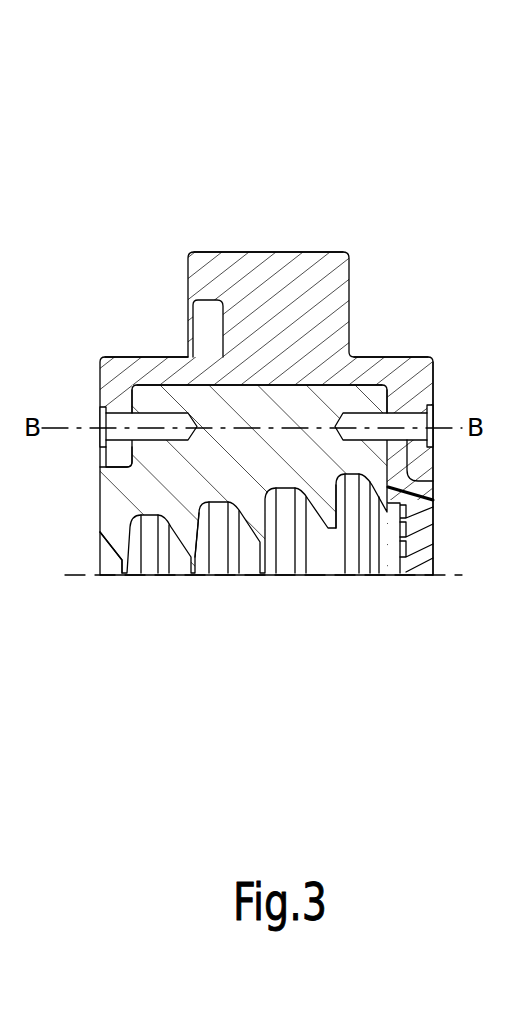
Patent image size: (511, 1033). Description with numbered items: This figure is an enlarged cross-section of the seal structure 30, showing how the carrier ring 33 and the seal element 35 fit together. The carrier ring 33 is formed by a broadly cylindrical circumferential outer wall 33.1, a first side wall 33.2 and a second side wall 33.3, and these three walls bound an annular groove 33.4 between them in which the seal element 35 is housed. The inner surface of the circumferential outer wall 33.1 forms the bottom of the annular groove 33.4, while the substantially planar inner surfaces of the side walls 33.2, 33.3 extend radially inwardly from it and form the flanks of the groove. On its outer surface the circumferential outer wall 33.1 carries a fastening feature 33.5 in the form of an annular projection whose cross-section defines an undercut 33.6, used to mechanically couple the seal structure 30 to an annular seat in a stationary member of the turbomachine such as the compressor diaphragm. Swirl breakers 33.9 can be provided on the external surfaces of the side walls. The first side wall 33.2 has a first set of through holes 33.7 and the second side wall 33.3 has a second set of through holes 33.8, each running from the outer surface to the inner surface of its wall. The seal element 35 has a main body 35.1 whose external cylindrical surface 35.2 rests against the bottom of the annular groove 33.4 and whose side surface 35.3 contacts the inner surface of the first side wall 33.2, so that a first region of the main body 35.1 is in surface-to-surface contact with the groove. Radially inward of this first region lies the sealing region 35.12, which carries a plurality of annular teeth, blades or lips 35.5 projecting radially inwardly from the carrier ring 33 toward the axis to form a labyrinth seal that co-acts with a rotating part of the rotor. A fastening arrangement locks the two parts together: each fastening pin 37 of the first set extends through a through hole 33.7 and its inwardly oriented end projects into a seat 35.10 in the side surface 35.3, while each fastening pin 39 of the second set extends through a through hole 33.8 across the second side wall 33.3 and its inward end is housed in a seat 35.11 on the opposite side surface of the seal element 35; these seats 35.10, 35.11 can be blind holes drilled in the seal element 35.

The seal structure 30 is at (432, 142).
The carrier ring 33 is at (311, 270).
The circumferential outer wall 33.1 is at (381, 371).
The first side wall 33.2 is at (419, 381).
The second side wall 33.3 is at (120, 393).
The annular groove 33.4 is at (212, 398).
The fastening feature 33.5 is at (258, 272).
The undercut 33.6 is at (208, 312).
The first set of through holes 33.7 is at (402, 486).
The second set of through holes 33.8 is at (98, 467).
The swirl breakers 33.9 is at (420, 547).
The seal element 35 is at (378, 582).
The main body 35.1 is at (262, 480).
The external cylindrical surface 35.2 is at (248, 389).
The side surface 35.3 is at (403, 503).
The annular teeth, blades or lips 35.5 is at (123, 552).
The seat 35.10 is at (356, 438).
The seat 35.11 is at (172, 437).
The sealing region 35.12 is at (91, 477).
The first set of fastening pins 37 is at (436, 406).
The second set of fastening pins 39 is at (120, 422).